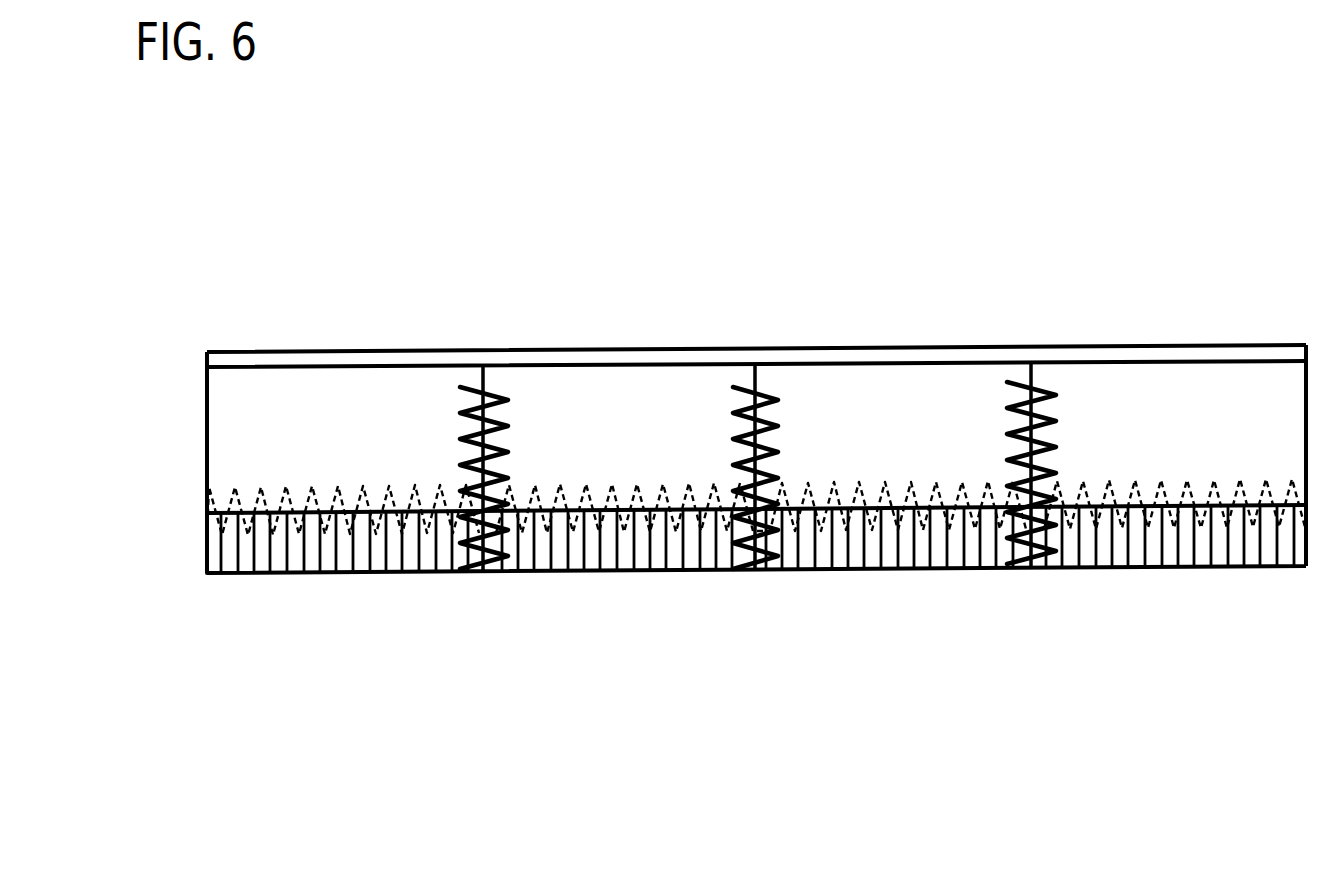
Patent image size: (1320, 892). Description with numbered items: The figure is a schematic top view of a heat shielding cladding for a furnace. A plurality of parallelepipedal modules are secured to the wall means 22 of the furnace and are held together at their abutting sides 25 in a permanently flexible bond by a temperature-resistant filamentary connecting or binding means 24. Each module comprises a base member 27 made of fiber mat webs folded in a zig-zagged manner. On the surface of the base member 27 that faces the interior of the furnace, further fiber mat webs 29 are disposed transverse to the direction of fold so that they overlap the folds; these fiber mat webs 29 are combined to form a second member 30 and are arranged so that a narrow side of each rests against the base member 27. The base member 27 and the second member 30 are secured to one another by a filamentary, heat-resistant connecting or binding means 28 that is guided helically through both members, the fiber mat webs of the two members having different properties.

The wall means 22 is at (238, 360).
The filamentary connecting or binding means 24 is at (505, 393).
The abutting sides 25 is at (484, 392).
The base member 27 is at (345, 432).
The filamentary and heat-resistant connecting or binding means 28 is at (230, 493).
The fiber mat webs 29 is at (923, 553).
The second member 30 is at (332, 547).